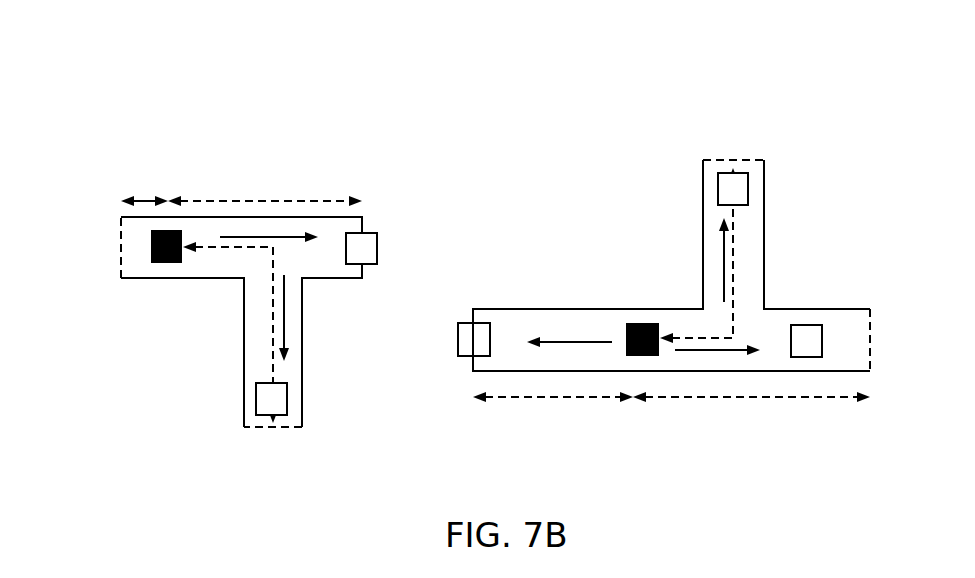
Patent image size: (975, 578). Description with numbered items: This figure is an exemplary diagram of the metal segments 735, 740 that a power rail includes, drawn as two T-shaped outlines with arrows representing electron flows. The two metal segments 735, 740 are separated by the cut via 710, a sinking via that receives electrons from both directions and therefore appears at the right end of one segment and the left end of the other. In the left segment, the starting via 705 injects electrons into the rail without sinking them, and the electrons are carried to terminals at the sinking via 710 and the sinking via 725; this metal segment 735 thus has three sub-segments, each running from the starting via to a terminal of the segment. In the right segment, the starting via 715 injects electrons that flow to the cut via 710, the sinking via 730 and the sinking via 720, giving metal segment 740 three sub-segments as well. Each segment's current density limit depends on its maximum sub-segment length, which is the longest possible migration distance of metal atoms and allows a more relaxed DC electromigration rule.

The via 705 is at (151, 240).
The via 710 is at (366, 233).
The via 715 is at (640, 323).
The via 720 is at (731, 173).
The via 725 is at (256, 403).
The via 730 is at (822, 340).
The metal segment 735 is at (212, 105).
The metal segment 740 is at (848, 180).